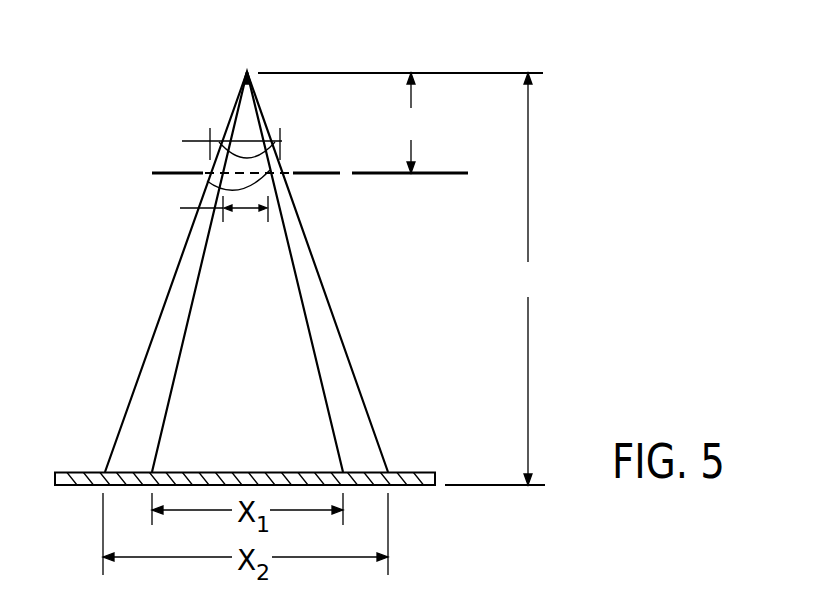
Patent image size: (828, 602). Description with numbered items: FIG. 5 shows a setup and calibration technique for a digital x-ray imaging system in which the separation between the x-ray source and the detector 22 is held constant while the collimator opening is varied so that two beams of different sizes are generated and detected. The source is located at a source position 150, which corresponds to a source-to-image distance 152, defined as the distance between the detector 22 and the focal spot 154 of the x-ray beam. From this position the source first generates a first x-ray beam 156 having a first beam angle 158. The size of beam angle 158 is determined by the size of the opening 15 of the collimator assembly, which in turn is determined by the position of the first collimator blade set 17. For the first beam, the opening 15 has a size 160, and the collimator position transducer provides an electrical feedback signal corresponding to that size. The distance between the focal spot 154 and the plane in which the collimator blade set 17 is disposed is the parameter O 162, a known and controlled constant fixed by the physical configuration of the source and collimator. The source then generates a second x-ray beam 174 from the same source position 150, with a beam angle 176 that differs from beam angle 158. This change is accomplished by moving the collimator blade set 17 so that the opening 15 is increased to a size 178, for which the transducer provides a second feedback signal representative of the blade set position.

The opening 15 is at (291, 166).
The first collimator blade set 17 is at (315, 177).
The detector 22 is at (88, 487).
The source position 150 is at (546, 91).
The SID 152 is at (546, 246).
The focal spot 154 is at (247, 72).
The first x-ray beam 156 is at (171, 392).
The first beam angle 158 is at (260, 126).
The opening size 160 is at (250, 223).
The parameter O 162 is at (436, 125).
The second x-ray beam 174 is at (178, 270).
The beam angle 176 is at (207, 181).
The opening size 178 is at (248, 122).